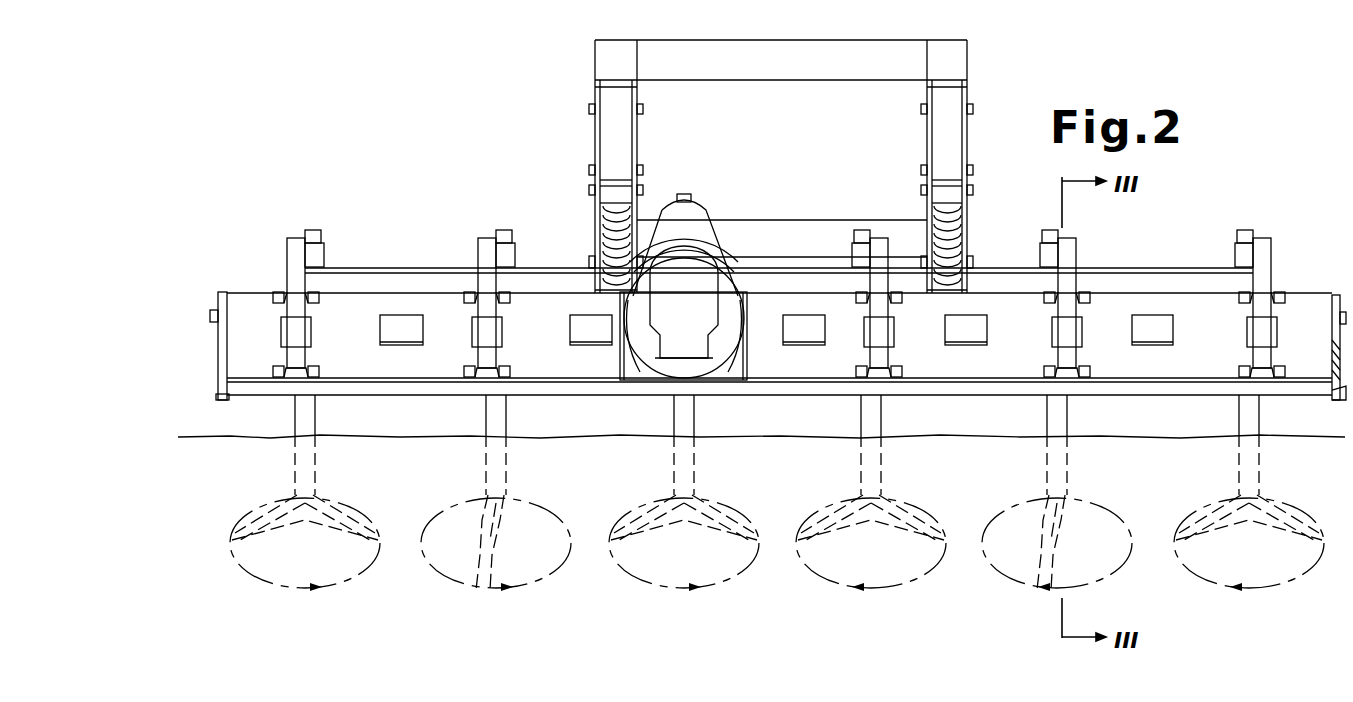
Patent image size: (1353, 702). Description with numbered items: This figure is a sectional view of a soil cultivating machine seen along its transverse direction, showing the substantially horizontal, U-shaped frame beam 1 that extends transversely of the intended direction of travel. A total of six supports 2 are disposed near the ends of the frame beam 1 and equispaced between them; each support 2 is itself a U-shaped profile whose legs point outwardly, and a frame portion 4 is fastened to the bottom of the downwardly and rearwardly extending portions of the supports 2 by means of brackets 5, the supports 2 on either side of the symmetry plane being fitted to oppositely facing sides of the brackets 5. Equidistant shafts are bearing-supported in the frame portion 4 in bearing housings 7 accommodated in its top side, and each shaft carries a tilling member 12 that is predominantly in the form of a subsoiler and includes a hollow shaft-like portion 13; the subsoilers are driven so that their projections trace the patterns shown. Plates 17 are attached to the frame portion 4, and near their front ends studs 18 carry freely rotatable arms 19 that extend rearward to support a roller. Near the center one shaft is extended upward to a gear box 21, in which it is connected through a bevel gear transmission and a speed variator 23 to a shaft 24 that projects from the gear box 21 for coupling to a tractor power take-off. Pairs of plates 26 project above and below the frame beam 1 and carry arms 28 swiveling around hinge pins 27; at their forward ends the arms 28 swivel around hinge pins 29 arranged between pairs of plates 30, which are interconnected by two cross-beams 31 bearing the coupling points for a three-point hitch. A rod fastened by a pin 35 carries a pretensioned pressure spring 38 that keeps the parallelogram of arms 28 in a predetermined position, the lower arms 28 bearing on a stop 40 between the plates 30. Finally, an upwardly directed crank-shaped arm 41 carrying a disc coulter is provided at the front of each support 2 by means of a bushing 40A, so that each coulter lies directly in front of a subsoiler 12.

The frame beam 1 is at (400, 272).
The support 2 is at (285, 252).
The frame portion 4 is at (426, 378).
The bracket 5 is at (340, 303).
The bearing housing 7 is at (420, 330).
The tilling member 12 is at (492, 470).
The hollow shaft-like portion 13 is at (293, 420).
The plate 17 is at (228, 372).
The stud 18 is at (210, 314).
The arm 19 is at (215, 356).
The gear box 21 is at (700, 234).
The speed variator 23 is at (700, 316).
The shaft 24 is at (690, 195).
The plate 26 is at (598, 206).
The hinge pin 27 is at (589, 189).
The arm 28 is at (609, 123).
The hinge pin 29 is at (590, 108).
The plate 30 is at (630, 62).
The cross-beam 31 is at (782, 72).
The pin 35 is at (643, 170).
The pressure spring 38 is at (603, 230).
The stop 40 is at (1236, 256).
The bushing 40A is at (326, 254).
The arm 41 is at (316, 230).